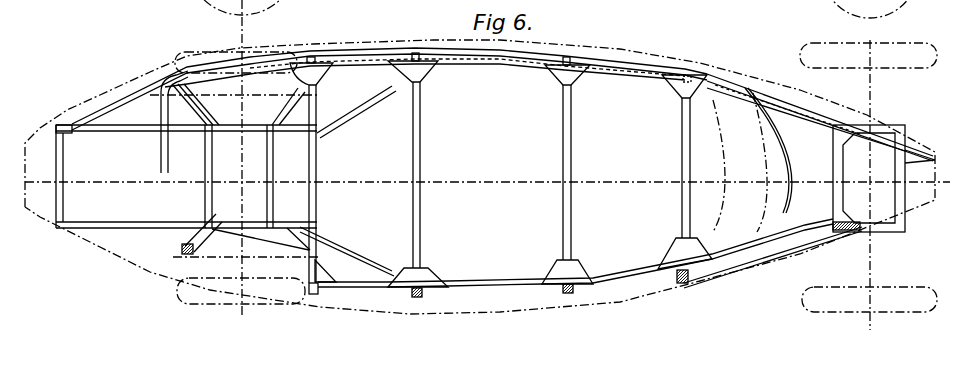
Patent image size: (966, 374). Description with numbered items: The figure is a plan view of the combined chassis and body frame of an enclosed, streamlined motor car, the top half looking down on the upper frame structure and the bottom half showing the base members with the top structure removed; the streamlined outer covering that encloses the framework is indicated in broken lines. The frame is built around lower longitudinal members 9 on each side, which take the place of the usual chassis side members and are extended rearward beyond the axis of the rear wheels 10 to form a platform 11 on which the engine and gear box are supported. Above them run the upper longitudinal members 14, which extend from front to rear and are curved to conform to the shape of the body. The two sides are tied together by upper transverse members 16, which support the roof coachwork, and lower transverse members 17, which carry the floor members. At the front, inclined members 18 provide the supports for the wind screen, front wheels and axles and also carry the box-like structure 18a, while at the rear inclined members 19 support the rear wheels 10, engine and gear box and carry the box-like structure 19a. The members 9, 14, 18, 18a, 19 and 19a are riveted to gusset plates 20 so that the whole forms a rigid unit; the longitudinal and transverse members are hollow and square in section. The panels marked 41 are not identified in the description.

The lower longitudinal member 9 is at (546, 78).
The rear wheel 10 is at (545, 9).
The platform 11 is at (130, 231).
The upper longitudinal member 14 is at (110, 106).
The upper transverse member 16 is at (317, 167).
The lower transverse member 17 is at (317, 206).
The inclined member 18 is at (790, 106).
The box-like structure 18a is at (897, 196).
The inclined member 19 is at (187, 112).
The box-like structure 19a is at (267, 227).
The gusset plate 20 is at (326, 72).
The side panel frame 41 is at (63, 172).